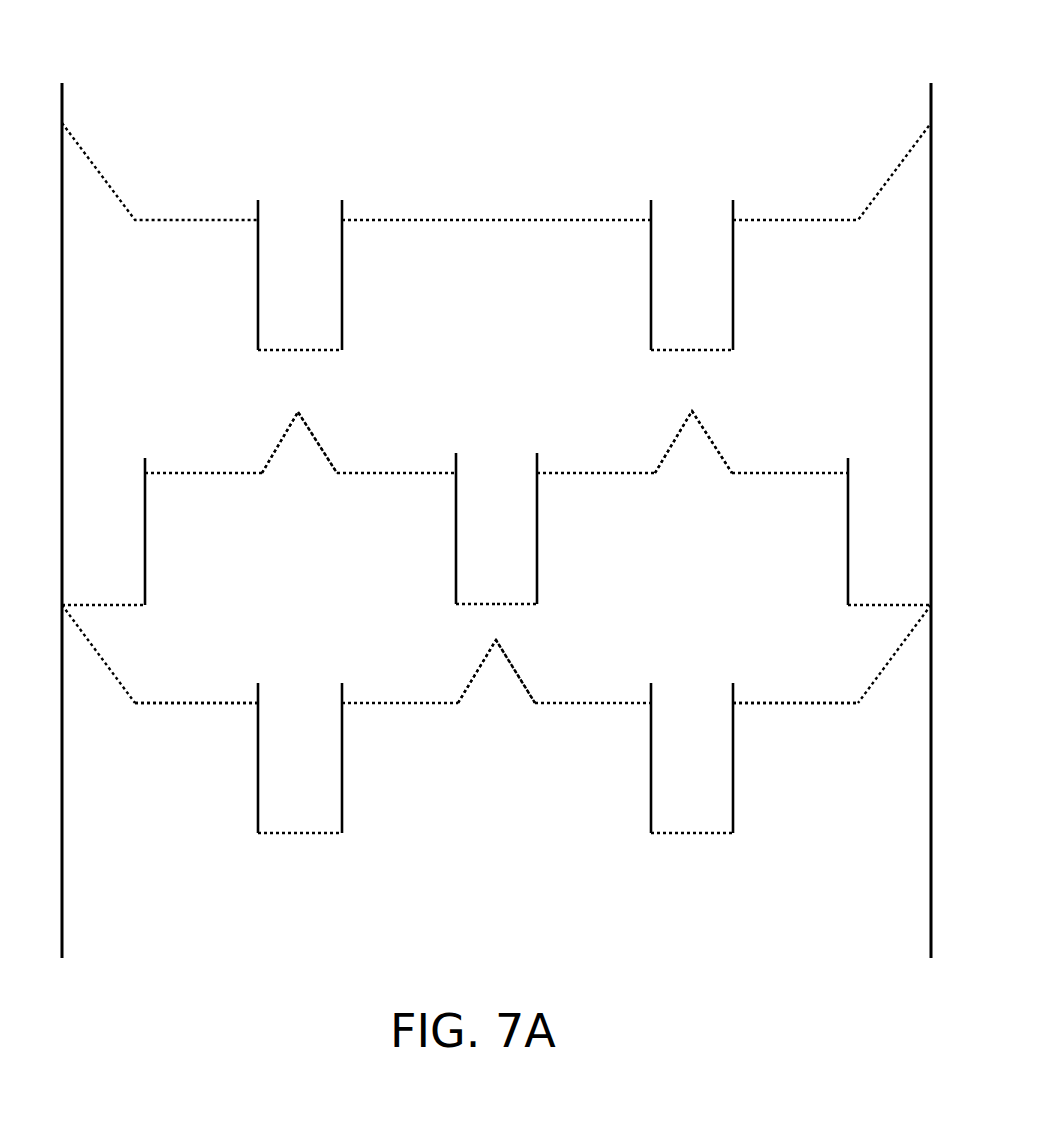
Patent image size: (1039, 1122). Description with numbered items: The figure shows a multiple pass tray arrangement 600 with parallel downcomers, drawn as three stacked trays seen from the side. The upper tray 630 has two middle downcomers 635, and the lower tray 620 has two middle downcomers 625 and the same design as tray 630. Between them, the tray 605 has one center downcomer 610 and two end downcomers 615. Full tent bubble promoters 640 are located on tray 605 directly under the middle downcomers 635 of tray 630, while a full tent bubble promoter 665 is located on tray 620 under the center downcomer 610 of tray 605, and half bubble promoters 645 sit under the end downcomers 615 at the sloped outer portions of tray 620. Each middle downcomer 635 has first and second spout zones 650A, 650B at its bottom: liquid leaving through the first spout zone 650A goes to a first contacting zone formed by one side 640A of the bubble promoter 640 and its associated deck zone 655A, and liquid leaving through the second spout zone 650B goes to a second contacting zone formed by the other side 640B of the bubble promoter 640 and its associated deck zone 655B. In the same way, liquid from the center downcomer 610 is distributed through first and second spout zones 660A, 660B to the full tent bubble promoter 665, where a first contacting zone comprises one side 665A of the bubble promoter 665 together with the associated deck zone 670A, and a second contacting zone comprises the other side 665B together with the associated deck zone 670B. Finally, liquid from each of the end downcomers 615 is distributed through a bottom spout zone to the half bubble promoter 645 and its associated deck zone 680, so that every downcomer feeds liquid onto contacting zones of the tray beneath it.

The multiple pass tray arrangement 600 is at (118, 56).
The tray 605 is at (818, 475).
The center downcomer 610 is at (456, 555).
The end downcomers 615 is at (145, 514).
The tray 620 is at (833, 705).
The middle downcomers 625 is at (258, 773).
The tray 630 is at (833, 222).
The middle downcomers 635 is at (258, 276).
The full tent bubble promoters 640 is at (285, 432).
The one side of bubble promoter 640A is at (327, 466).
The other side of bubble promoter 640B is at (266, 463).
The half bubble promoters 645 is at (117, 678).
The first spout zone 650A is at (338, 352).
The second spout zone 650B is at (262, 352).
The deck zone 655A is at (376, 473).
The deck zone 655B is at (176, 473).
The first spout zone 660A is at (462, 606).
The second spout zone 660B is at (530, 606).
The full tent bubble promoter 665 is at (475, 668).
The one side of bubble promoter 665A is at (463, 695).
The other side of bubble promoter 665B is at (528, 696).
The deck zone 670A is at (380, 703).
The deck zone 670B is at (585, 703).
The deck zone 680 is at (203, 703).